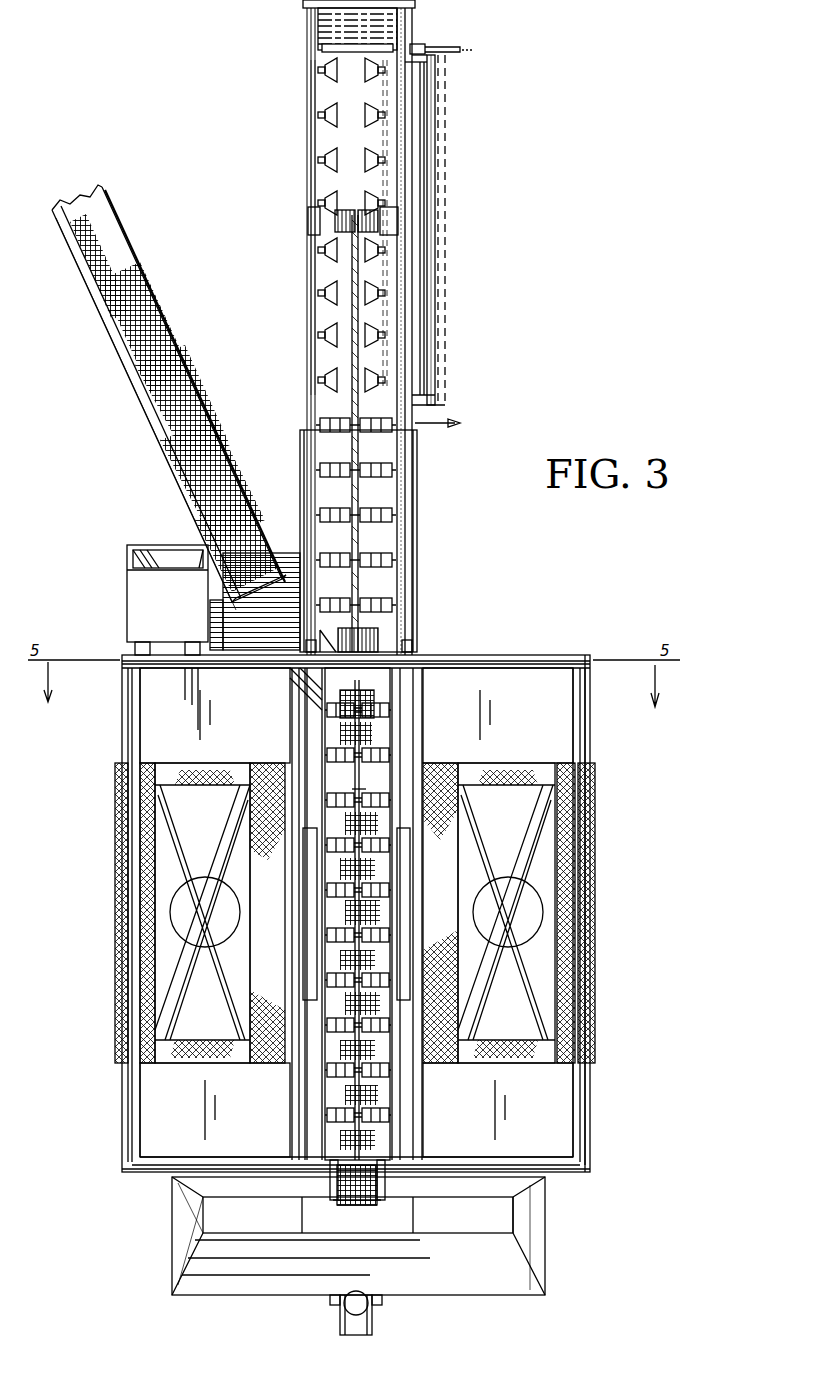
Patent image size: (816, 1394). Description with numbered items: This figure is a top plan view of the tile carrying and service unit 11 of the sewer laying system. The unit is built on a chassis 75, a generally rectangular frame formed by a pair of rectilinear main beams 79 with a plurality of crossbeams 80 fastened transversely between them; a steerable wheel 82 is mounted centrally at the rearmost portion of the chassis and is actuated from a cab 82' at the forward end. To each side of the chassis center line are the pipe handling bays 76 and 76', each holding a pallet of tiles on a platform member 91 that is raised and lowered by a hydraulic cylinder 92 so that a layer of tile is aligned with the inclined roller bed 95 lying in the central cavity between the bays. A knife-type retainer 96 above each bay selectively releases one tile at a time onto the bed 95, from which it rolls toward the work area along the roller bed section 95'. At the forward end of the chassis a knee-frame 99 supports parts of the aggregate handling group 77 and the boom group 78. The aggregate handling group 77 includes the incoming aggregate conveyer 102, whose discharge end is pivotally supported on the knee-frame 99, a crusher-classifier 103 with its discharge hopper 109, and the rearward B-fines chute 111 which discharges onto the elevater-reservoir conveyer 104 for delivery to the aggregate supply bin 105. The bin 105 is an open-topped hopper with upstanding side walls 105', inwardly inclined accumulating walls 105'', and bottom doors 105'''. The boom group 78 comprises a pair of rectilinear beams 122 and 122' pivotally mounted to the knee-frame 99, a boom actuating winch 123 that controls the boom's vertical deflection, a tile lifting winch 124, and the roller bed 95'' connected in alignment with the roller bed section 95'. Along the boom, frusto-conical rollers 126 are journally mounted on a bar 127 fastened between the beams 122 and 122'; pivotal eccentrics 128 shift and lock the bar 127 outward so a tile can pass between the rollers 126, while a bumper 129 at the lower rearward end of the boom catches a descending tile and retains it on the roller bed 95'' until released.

The tile carrying and service unit 11 is at (359, 781).
The chassis 75 is at (514, 659).
The pipe handling bay 76 is at (331, 913).
The pipe handling bay 76' is at (530, 916).
The aggregate handling group 77 is at (190, 512).
The boom group 78 is at (312, 265).
The rectilinear main beams 79 is at (120, 870).
The crossbeams 80 is at (574, 659).
The steerable wheel 82 is at (333, 1315).
The cab 82' is at (144, 600).
The platform member 91 is at (120, 1000).
The hydraulic cylinder 92 is at (190, 920).
The inclined roller bed 95 is at (335, 914).
The roller bed section 95' is at (389, 515).
The roller bed 95'' is at (288, 227).
The knife-type retainer 96 is at (214, 913).
The knee-frame 99 is at (412, 590).
The incoming aggregate conveyer 102 is at (140, 400).
The crusher-classifier 103 is at (255, 655).
The elevater-reservoir conveyer 104 is at (372, 727).
The aggregate supply bin 105 is at (326, 1236).
The side walls 105' is at (571, 1237).
The accumulating walls 105'' is at (507, 1215).
The doors 105''' is at (286, 1215).
The discharge hopper 109 is at (182, 655).
The B-fines chute 111 is at (305, 690).
The rectilinear beam 122 is at (291, 227).
The rectilinear beam 122' is at (456, 225).
The boom actuating winch 123 is at (380, 640).
The tile lifting winch 124 is at (330, 218).
The rollers 126 is at (320, 72).
The bar 127 is at (432, 200).
The pivotal eccentrics 128 is at (420, 46).
The bumper 129 is at (318, 36).